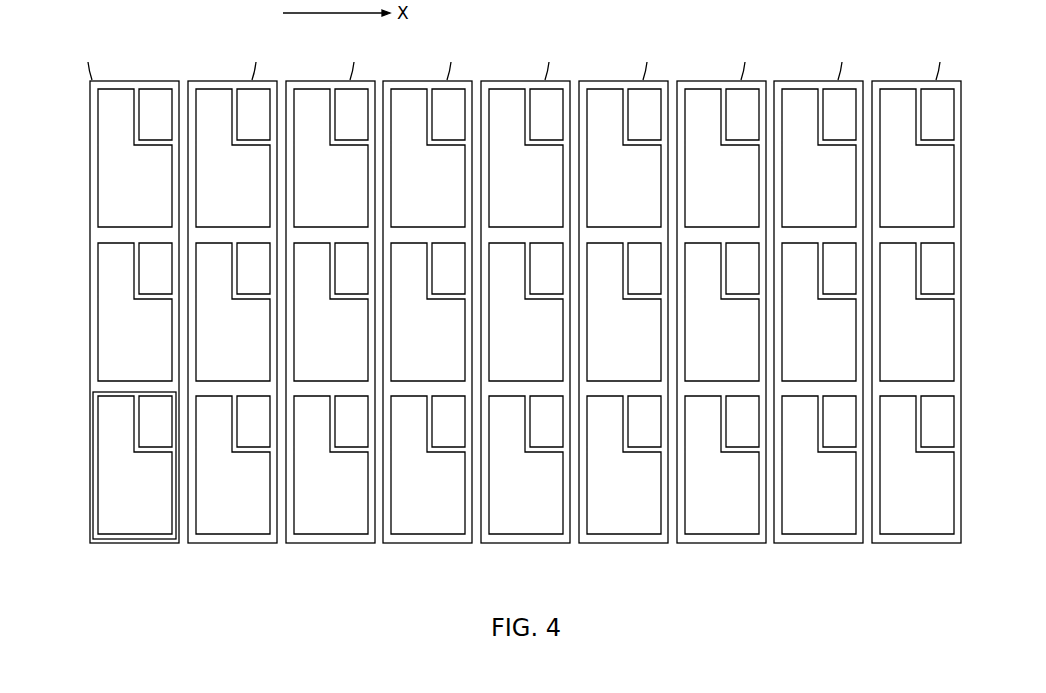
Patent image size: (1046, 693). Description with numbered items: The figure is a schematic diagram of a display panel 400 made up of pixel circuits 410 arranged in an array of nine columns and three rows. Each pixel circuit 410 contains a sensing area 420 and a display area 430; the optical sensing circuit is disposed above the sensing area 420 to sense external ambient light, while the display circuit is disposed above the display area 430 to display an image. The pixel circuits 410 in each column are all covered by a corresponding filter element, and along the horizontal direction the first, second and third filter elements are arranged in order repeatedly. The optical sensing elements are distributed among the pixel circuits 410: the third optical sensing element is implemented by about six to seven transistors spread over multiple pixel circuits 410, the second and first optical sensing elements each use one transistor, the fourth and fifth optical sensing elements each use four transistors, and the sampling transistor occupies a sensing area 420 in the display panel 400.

The display panel 400 is at (551, 589).
The pixel circuit 410 is at (123, 543).
The sensing area 420 is at (155, 87).
The display area 430 is at (98, 128).